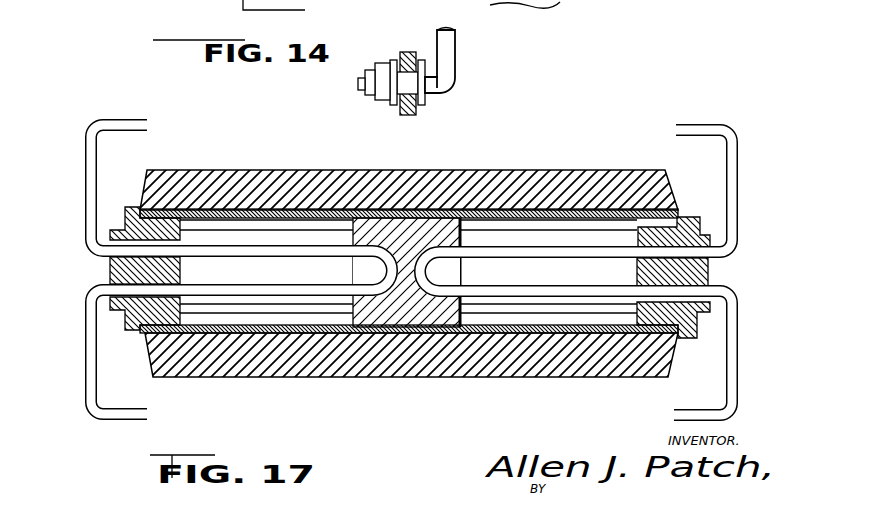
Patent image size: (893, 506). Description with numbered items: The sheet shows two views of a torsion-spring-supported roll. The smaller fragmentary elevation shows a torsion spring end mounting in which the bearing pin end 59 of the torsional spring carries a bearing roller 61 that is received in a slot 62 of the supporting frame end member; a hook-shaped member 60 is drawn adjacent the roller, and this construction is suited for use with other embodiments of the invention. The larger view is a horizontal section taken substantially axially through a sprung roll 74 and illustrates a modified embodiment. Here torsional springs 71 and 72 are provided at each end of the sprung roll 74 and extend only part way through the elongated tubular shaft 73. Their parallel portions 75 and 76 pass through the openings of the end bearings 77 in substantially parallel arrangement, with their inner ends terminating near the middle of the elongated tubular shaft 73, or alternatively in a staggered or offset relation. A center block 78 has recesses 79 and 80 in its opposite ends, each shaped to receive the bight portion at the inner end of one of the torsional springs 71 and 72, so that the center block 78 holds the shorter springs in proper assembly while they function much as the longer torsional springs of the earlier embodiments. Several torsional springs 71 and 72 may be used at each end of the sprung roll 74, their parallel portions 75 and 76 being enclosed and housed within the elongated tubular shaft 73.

In FIG. 14, the bearing pin end 59 is at (437, 88).
In FIG. 14, the hook 60 is at (448, 44).
In FIG. 14, the bearing roller 61 is at (398, 112).
In FIG. 14, the slot 62 is at (408, 52).
In FIG. 17, the torsional spring 71 is at (92, 338).
In FIG. 17, the torsional spring 72 is at (730, 345).
In FIG. 17, the elongated tubular shaft 73 is at (287, 375).
In FIG. 17, the sprung roll 74 is at (513, 170).
In FIG. 17, the parallel portion 75 is at (214, 362).
In FIG. 17, the parallel portion 76 is at (562, 300).
In FIG. 17, the end bearing 77 is at (108, 271).
In FIG. 17, the center block 78 is at (412, 315).
In FIG. 17, the recess 79 is at (377, 277).
In FIG. 17, the recess 80 is at (445, 277).